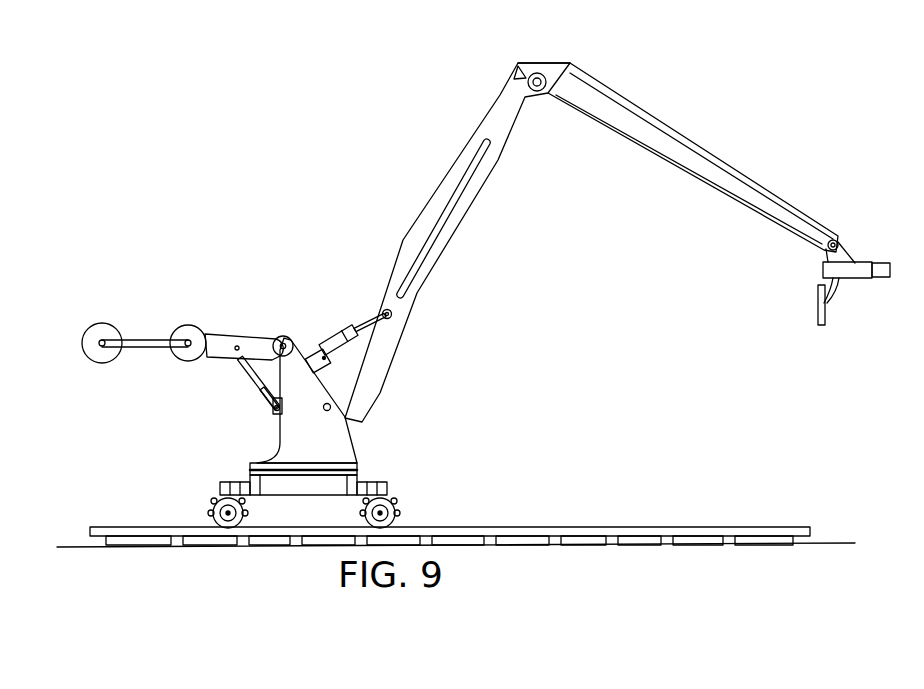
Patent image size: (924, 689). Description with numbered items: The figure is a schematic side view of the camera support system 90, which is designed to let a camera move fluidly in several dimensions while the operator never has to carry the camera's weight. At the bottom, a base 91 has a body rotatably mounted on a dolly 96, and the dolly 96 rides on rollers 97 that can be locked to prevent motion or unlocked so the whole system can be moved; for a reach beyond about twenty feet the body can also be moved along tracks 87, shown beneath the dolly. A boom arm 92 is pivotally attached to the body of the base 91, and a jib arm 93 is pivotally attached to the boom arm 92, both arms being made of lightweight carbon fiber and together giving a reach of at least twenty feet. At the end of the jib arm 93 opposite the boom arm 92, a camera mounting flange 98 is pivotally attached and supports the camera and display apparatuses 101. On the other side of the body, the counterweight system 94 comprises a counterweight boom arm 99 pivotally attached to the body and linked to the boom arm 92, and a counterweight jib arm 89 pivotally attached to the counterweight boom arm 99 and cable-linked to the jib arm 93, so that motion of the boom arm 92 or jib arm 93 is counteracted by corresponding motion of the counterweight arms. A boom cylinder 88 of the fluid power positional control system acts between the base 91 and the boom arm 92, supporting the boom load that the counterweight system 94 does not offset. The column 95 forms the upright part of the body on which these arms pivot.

The tracks 87 is at (615, 545).
The boom cylinder 88 is at (342, 338).
The counterweight jib arm 89 is at (140, 338).
The camera support system 90 is at (216, 186).
The base 91 is at (365, 426).
The boom arm 92 is at (412, 223).
The jib arm 93 is at (690, 143).
The counterweight system 94 is at (197, 313).
The column 95 is at (307, 434).
The dolly 96 is at (360, 467).
The rollers 97 is at (363, 512).
The camera mounting flange 98 is at (873, 250).
The counterweight boom arm 99 is at (240, 337).
The camera and display apparatuses 101 is at (852, 300).